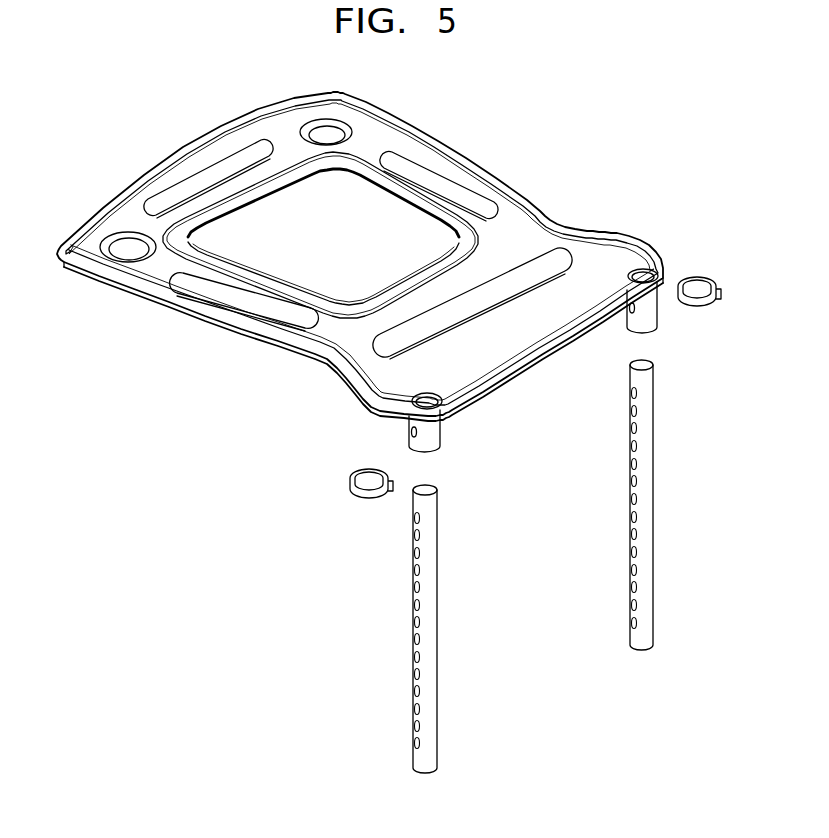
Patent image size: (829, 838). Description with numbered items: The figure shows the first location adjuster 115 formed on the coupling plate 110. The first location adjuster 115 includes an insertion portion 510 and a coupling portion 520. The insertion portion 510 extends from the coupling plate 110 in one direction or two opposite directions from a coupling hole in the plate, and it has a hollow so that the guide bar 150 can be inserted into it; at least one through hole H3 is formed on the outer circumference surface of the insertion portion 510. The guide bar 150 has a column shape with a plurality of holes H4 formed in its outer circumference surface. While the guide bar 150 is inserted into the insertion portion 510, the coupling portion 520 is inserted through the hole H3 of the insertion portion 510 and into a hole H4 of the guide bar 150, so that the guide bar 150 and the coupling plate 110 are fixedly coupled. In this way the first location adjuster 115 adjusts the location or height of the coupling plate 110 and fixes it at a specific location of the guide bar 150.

The coupling plate 110 is at (522, 195).
The first location adjuster 115 is at (242, 398).
The insertion portion 510 is at (407, 427).
The through hole H3 is at (380, 443).
The coupling portion 520 is at (347, 488).
The guide bar 150 is at (413, 698).
The holes H4 is at (378, 626).